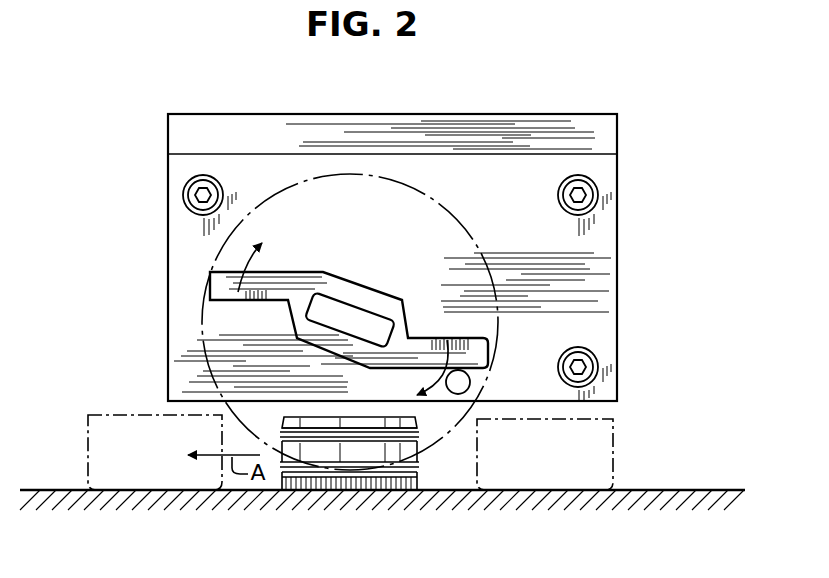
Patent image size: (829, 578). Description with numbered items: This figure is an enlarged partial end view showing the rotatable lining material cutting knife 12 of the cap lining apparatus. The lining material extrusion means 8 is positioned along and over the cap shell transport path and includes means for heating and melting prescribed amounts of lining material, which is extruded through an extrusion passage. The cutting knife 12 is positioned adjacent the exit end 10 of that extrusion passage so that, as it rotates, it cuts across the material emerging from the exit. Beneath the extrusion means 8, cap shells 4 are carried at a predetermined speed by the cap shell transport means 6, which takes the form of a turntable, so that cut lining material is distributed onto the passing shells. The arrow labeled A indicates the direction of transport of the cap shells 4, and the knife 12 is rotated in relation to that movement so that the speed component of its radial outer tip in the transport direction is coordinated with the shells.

The cap shells 4 is at (88, 450).
The cap shell transport means 6 is at (688, 492).
The lining material extrusion means 8 is at (535, 117).
The exit end 10 is at (460, 394).
The rotatable lining material cutting knife 12 is at (380, 290).